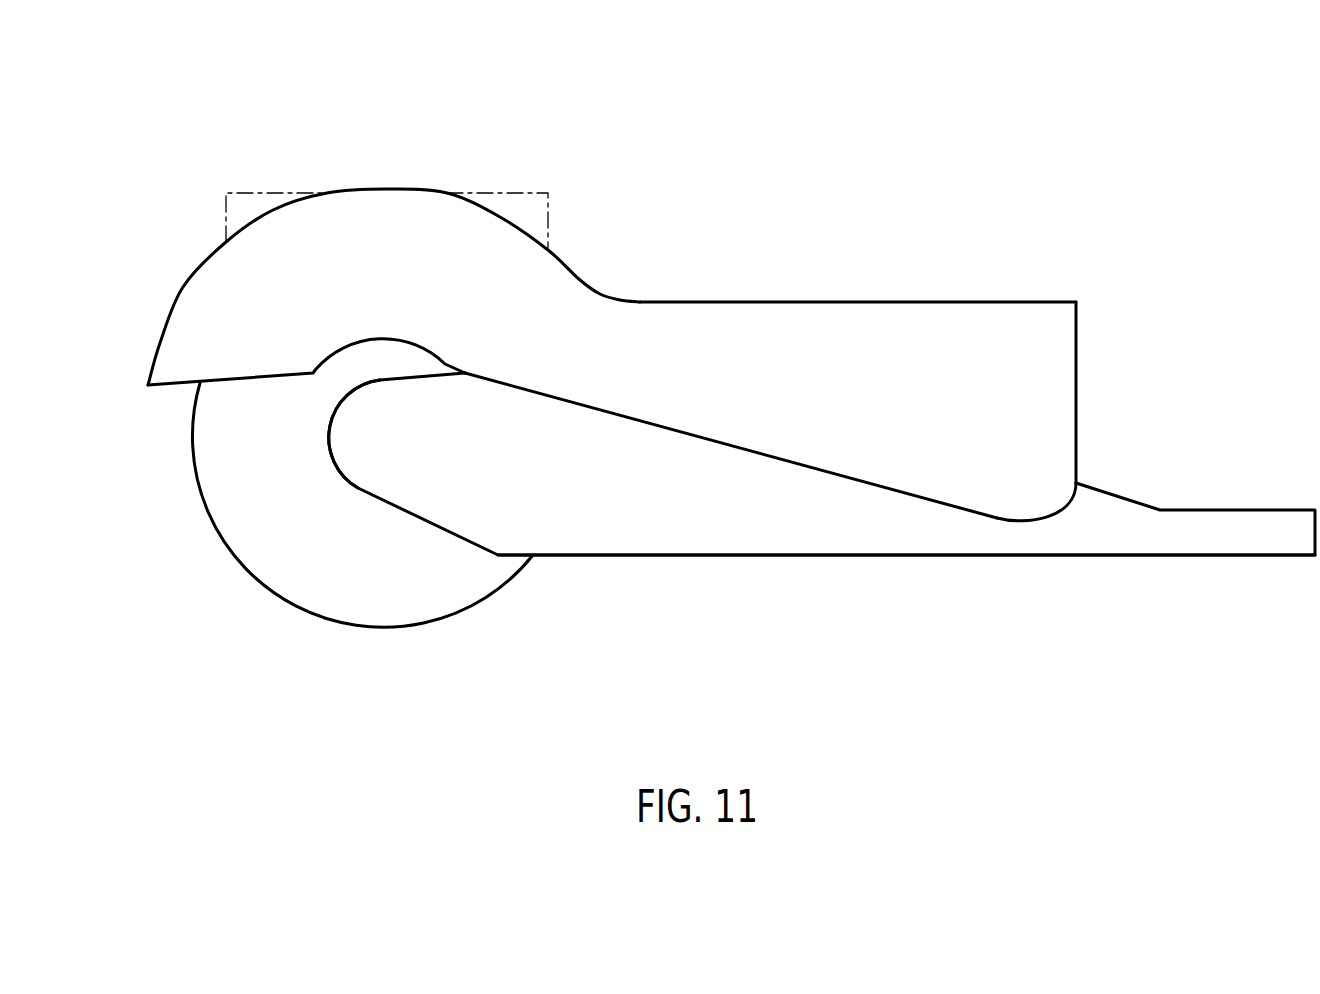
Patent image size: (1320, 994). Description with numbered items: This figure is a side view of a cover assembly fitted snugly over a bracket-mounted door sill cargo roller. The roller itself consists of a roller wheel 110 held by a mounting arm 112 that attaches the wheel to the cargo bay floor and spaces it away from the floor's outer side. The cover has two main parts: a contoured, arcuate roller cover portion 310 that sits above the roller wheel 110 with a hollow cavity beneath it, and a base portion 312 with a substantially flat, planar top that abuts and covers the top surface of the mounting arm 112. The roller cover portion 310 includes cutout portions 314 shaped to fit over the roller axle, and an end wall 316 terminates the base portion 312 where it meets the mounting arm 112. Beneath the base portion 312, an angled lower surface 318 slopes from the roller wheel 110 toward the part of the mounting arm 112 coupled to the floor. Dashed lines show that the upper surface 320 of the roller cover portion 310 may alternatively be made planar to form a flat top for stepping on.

The roller cover portion 310 is at (769, 141).
The base portion 312 is at (848, 303).
The cutout portions 314 is at (373, 355).
The end wall of clip 316 is at (1025, 301).
The angled lower surface 318 is at (697, 437).
The upper surface 320 is at (368, 188).
The roller wheel 110 is at (300, 612).
The mounting arm 112 is at (737, 520).